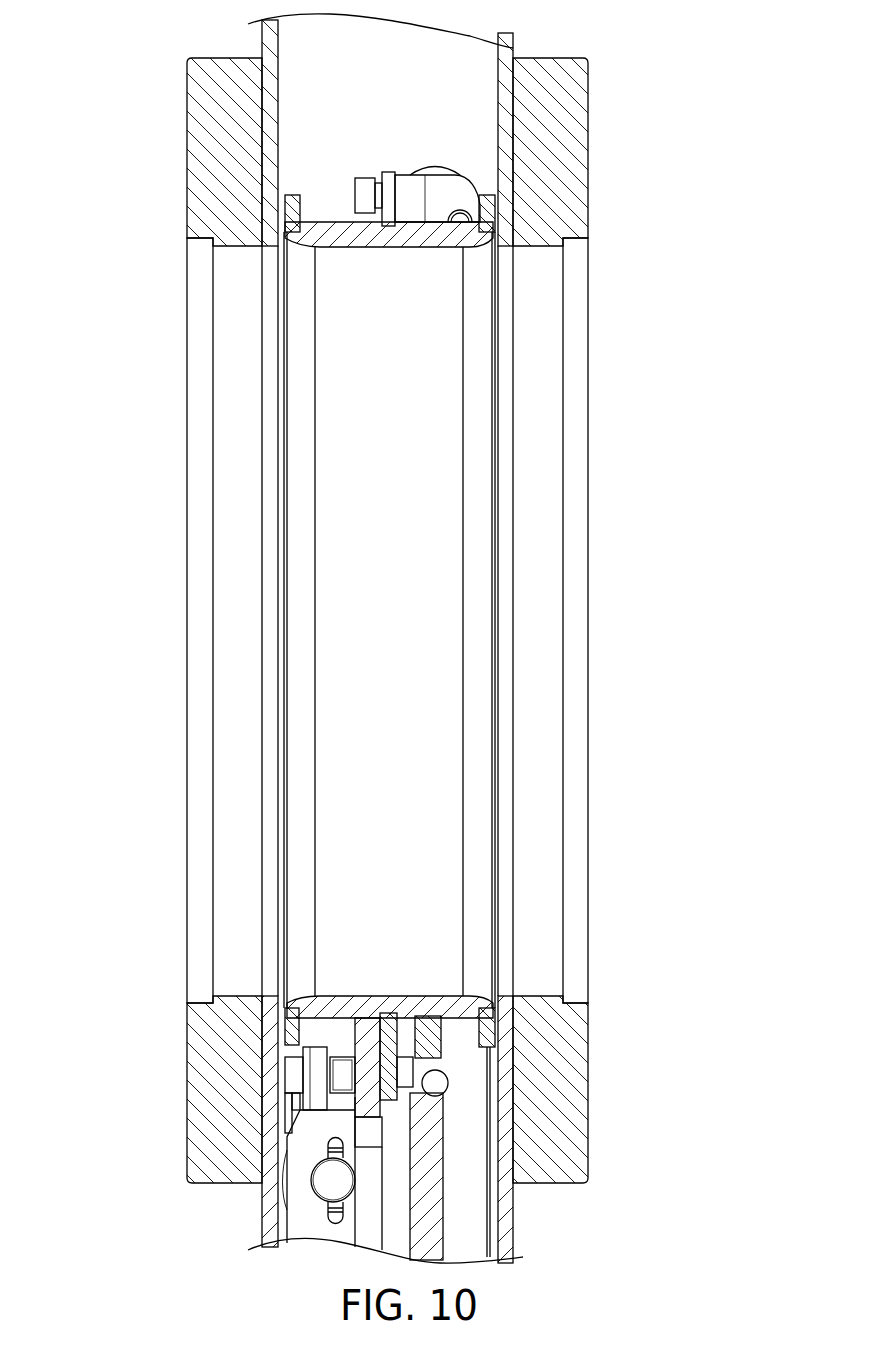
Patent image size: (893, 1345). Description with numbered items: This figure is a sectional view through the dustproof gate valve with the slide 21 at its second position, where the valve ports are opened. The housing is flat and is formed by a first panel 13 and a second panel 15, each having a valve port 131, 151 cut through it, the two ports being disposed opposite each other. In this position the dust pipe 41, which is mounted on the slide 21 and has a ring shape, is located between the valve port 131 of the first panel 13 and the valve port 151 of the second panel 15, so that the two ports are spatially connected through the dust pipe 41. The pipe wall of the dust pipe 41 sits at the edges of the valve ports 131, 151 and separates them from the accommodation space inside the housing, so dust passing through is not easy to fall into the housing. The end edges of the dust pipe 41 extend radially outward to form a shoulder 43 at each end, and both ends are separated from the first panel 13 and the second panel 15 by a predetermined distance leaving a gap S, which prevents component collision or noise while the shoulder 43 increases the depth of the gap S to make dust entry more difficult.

The second panel 15 is at (262, 38).
The first panel 13 is at (513, 48).
The valve port 151 is at (233, 623).
The valve port 131 is at (535, 639).
The dust pipe 41 is at (440, 512).
The shoulder 43 is at (293, 1033).
The gap S is at (283, 1012).
The slide 21 is at (455, 1229).